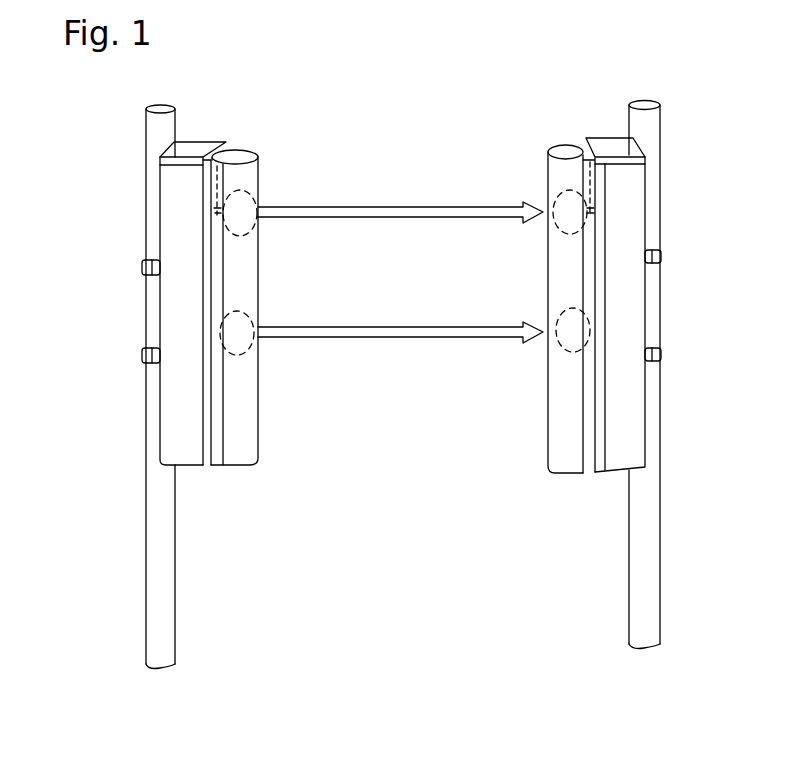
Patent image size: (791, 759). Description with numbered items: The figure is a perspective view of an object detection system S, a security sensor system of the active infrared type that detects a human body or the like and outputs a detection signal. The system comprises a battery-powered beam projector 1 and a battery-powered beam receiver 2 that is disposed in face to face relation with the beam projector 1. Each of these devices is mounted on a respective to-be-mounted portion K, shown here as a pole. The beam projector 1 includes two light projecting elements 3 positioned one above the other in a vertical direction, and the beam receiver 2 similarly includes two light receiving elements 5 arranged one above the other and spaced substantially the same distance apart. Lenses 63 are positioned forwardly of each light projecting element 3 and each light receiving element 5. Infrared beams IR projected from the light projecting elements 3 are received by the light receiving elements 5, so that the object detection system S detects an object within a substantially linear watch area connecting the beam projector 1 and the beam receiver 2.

The beam projector 1 is at (239, 279).
The beam receiver 2 is at (616, 272).
The light projecting element 3 is at (218, 152).
The light receiving element 5 is at (570, 138).
The lens 63 is at (258, 204).
The to-be-mounted portion K is at (158, 135).
The object detection system S is at (428, 706).
The infrared beam IR is at (400, 289).